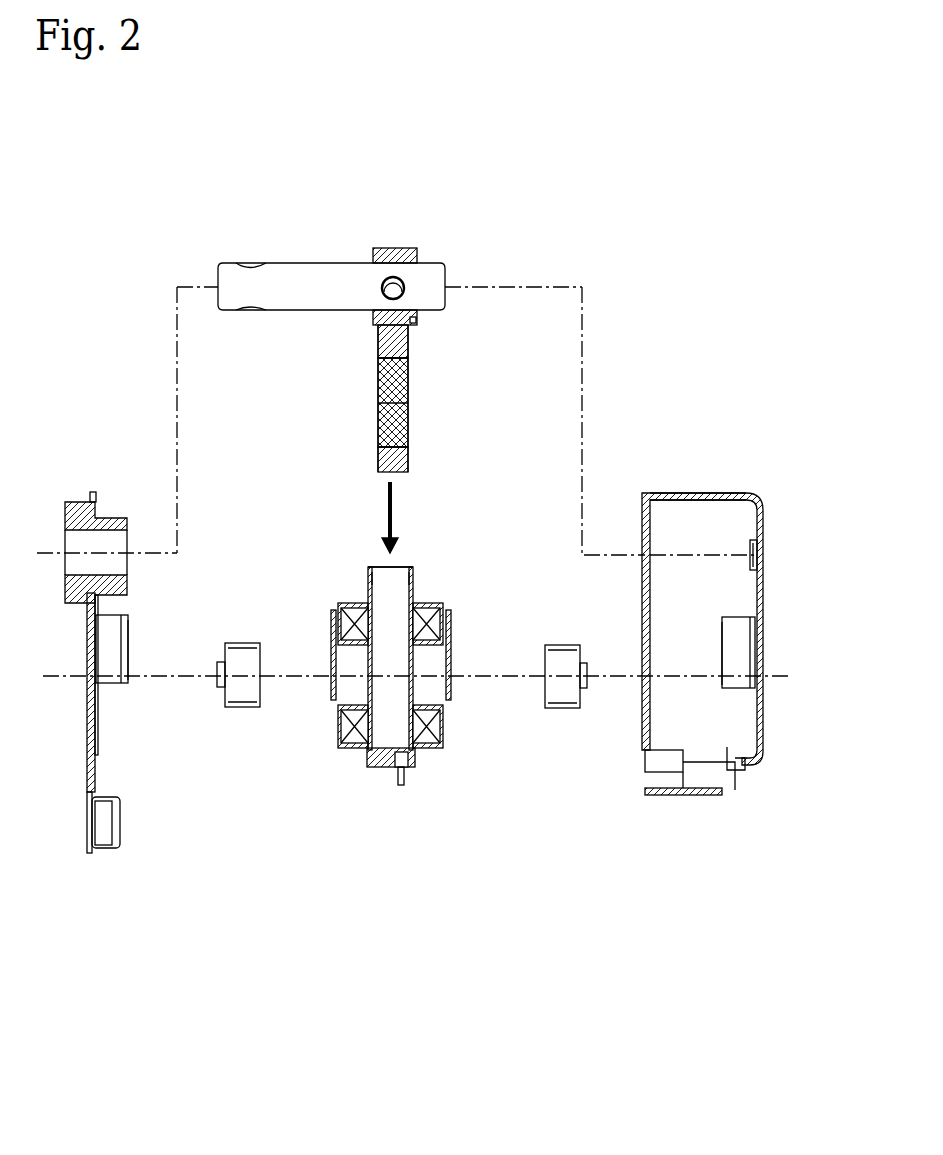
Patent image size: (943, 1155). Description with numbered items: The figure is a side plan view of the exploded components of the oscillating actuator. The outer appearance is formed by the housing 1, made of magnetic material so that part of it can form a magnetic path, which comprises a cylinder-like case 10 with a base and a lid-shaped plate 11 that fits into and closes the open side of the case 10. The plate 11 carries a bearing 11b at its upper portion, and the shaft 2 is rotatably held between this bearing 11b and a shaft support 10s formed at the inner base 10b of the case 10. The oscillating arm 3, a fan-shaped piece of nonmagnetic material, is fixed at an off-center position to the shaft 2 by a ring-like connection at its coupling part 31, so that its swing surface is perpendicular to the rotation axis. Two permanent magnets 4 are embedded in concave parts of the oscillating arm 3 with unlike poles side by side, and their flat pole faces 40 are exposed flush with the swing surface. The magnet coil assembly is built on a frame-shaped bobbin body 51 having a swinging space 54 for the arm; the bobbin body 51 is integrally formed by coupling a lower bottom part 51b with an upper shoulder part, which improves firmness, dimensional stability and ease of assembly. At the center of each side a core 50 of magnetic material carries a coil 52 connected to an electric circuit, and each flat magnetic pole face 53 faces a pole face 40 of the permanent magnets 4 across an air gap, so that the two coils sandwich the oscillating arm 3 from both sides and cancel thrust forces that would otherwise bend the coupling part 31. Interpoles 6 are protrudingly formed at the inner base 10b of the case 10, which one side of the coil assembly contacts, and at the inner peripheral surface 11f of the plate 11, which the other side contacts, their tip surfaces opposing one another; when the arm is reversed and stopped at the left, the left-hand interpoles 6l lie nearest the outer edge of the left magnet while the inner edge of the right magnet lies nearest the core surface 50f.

The housing 1 is at (665, 496).
The shaft 2 is at (293, 277).
The oscillating arm 3 is at (400, 253).
The permanent magnet 4 is at (402, 432).
The interpole 6 is at (117, 640).
The left-hand side interpoles 6l is at (130, 655).
The case 10 is at (760, 500).
The inner base 10b is at (757, 700).
The shaft support 10s is at (752, 558).
The plate 11 is at (87, 733).
The bearing 11b is at (85, 492).
The inner peripheral surface 11f is at (95, 775).
The coupling part 31 is at (413, 320).
The pole face 40 is at (408, 395).
The core 50 is at (232, 700).
The core surface 50f is at (264, 690).
The bobbin body 51 is at (413, 585).
The bottom part 51b is at (385, 765).
The coil 52 is at (350, 745).
The magnetic pole face 53 is at (370, 697).
The swinging space 54 is at (380, 585).